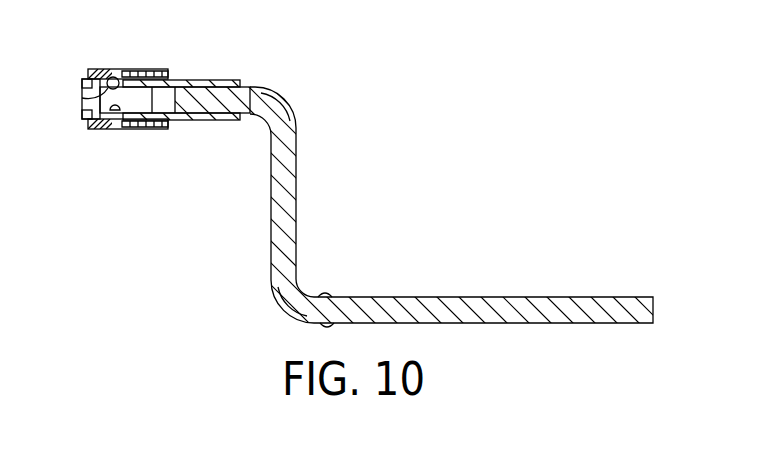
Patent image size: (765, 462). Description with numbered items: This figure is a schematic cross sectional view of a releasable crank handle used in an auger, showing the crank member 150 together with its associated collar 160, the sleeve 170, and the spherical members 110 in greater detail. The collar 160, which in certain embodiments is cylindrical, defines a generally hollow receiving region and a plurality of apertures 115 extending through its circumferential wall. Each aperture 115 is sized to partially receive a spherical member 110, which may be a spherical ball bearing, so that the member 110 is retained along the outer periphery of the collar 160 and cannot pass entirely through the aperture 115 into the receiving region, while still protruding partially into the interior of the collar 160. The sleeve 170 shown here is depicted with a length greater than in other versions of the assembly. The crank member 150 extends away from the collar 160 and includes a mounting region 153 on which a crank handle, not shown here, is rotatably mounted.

The spherical member 110 is at (82, 98).
The aperture 115 is at (113, 112).
The crank member 150 is at (272, 227).
The mounting region 153 is at (500, 299).
The collar 160 is at (225, 80).
The sleeve 170 is at (113, 70).